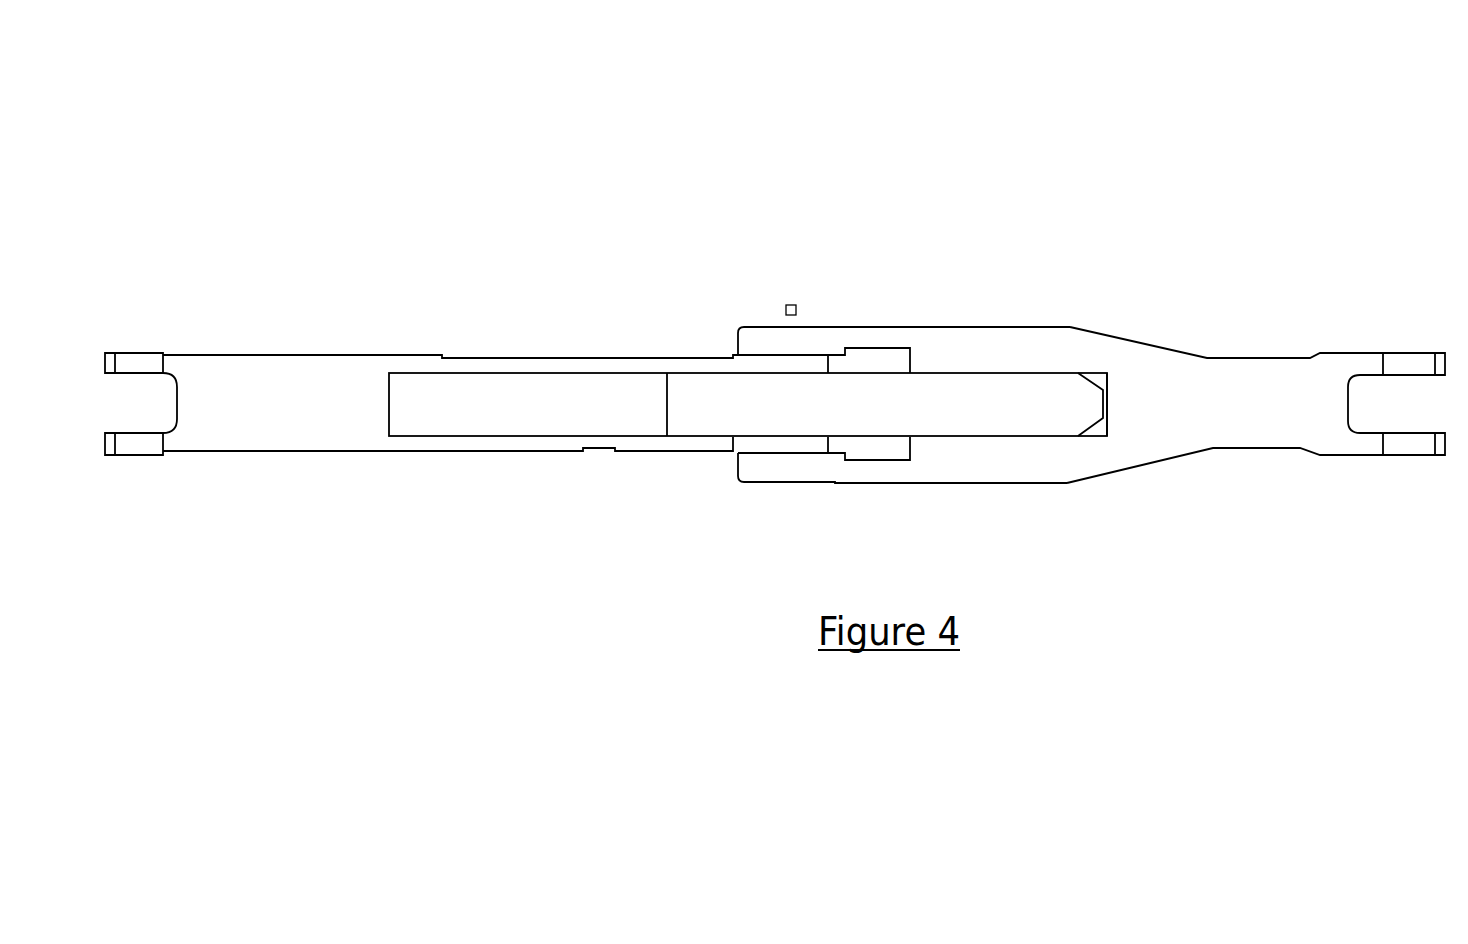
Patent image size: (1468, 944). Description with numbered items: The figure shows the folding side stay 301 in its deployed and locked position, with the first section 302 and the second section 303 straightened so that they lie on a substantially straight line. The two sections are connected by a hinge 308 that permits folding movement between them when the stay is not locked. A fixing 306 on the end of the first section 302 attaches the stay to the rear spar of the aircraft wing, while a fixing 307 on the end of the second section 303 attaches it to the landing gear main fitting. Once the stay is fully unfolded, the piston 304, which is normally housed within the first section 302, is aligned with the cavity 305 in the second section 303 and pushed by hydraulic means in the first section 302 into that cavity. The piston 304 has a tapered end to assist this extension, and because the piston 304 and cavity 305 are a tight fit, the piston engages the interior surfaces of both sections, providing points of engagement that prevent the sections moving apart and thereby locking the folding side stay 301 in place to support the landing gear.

The folding side stay 301 is at (719, 178).
The first section 302 is at (323, 430).
The second section 303 is at (1236, 418).
The piston 304 is at (710, 407).
The cavity 305 is at (1098, 430).
The fixing 306 is at (152, 442).
The fixing 307 is at (1407, 455).
The hinge 308 is at (774, 322).